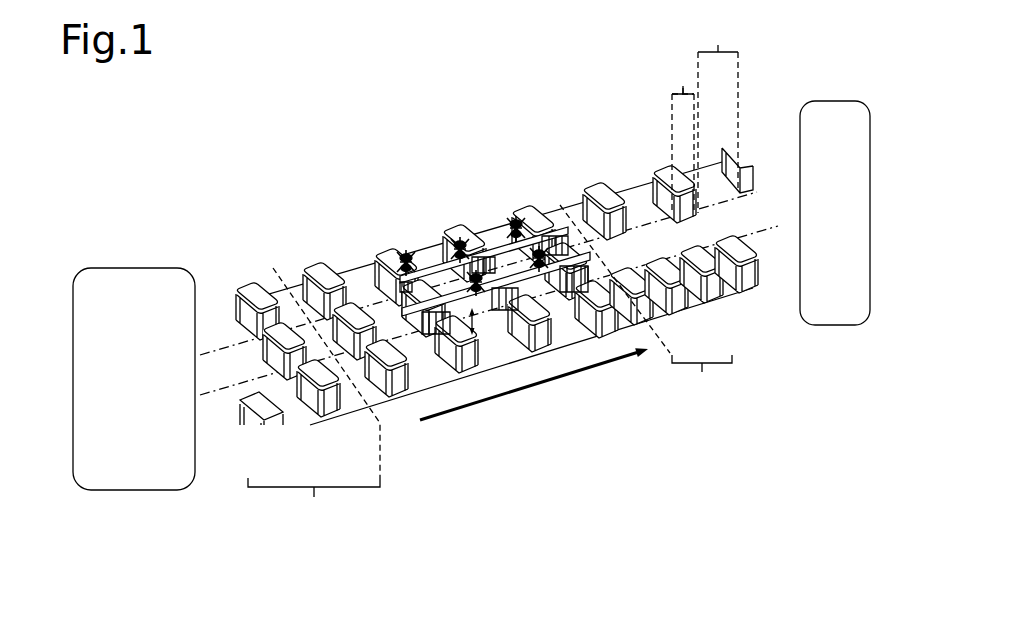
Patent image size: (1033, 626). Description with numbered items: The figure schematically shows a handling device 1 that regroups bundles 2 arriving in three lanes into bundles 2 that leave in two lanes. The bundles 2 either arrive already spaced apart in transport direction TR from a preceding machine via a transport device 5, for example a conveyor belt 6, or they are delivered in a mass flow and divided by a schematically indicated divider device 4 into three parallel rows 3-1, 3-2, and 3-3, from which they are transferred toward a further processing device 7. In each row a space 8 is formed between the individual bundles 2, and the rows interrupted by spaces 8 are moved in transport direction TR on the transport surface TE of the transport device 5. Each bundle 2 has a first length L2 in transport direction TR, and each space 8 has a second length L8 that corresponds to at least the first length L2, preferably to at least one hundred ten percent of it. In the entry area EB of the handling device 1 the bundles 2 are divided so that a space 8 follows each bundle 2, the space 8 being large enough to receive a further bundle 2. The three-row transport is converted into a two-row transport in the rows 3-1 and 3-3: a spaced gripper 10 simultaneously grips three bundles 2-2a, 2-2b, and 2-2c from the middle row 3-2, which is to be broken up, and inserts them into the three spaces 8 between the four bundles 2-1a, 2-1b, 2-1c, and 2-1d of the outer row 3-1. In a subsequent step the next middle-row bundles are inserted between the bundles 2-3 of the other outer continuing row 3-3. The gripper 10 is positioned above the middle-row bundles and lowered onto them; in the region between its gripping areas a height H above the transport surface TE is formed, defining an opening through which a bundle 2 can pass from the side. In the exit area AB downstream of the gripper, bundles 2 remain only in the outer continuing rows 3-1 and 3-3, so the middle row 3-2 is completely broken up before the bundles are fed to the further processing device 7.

The handling device 1 is at (317, 76).
The spaced gripper 10 is at (470, 214).
The bundle 2 is at (587, 204).
The bundle of outer parallel row 2-1a is at (529, 222).
The bundle of outer parallel row 2-1b is at (462, 236).
The bundle of outer parallel row 2-1c is at (382, 262).
The bundle of outer parallel row 2-1d is at (320, 270).
The bundle of middle parallel row 2-2a is at (562, 240).
The bundle of middle parallel row 2-2b is at (483, 268).
The bundle of middle parallel row 2-2c is at (405, 272).
The bundle of outer continuing row 2-3 is at (468, 366).
The outer parallel row 3-1 is at (494, 260).
The middle parallel row 3-2 is at (493, 300).
The outer parallel row 3-3 is at (757, 252).
The divider device 4 is at (140, 389).
The transport device 5 is at (531, 383).
The conveyor belt 6 is at (410, 400).
The further processing device 7 is at (837, 226).
The space 8 is at (280, 262).
The transport surface TE is at (647, 240).
The first length L2 is at (679, 137).
The second length L8 is at (718, 118).
The height H is at (475, 330).
The transport direction TR is at (534, 384).
The exit area AB is at (659, 304).
The entry area EB is at (314, 504).